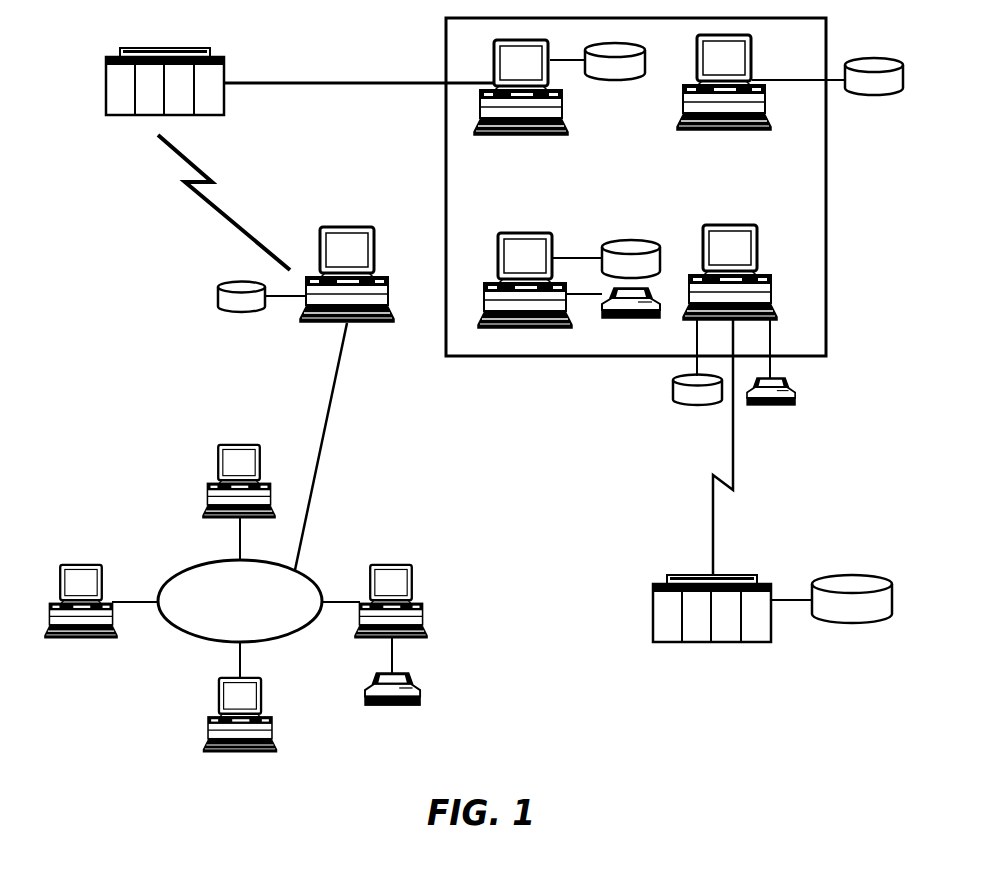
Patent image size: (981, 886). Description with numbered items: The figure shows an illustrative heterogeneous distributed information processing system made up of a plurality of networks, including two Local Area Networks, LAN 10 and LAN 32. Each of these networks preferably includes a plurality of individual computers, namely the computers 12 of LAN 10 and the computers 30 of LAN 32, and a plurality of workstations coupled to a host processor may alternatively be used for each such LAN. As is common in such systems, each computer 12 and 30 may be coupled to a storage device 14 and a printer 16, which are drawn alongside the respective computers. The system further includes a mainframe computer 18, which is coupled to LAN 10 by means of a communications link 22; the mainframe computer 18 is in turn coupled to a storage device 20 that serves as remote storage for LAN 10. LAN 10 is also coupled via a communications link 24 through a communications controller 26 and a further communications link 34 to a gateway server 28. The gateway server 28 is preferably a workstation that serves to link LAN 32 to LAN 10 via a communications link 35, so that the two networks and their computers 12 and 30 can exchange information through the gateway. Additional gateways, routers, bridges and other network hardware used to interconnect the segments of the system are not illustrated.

The Local Area Network 10 is at (548, 358).
The individual computer 12 is at (522, 137).
The storage device 14 is at (217, 298).
The printer 16 is at (633, 322).
The mainframe computer 18 is at (680, 575).
The storage device 20 is at (833, 577).
The communications link 22 is at (738, 460).
The communications link 24 is at (268, 82).
The communications controller 26 is at (105, 90).
The gateway server 28 is at (347, 228).
The individual computer 30 is at (237, 445).
The Local Area Network 32 is at (182, 637).
The communications link 34 is at (217, 203).
The communications link 35 is at (326, 425).